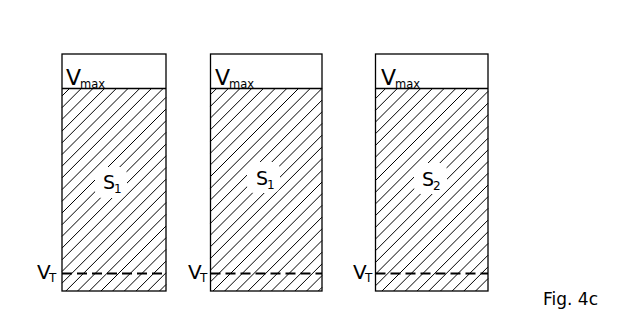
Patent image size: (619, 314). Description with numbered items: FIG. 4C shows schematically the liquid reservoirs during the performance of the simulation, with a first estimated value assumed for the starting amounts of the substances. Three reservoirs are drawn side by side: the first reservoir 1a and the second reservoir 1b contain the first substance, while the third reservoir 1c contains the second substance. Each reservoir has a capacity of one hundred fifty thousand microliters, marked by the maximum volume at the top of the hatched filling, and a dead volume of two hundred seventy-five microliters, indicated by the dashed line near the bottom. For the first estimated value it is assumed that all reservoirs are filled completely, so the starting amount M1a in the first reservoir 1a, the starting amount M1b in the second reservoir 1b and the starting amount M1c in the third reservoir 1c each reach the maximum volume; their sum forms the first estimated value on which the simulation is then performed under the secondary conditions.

The first reservoir 1a is at (61, 55).
The second reservoir 1b is at (210, 53).
The third reservoir 1c is at (375, 53).
The starting amount of the first reservoir M1a is at (91, 89).
The starting amount of the second reservoir M1b is at (245, 89).
The starting amount of the third reservoir M1c is at (411, 89).